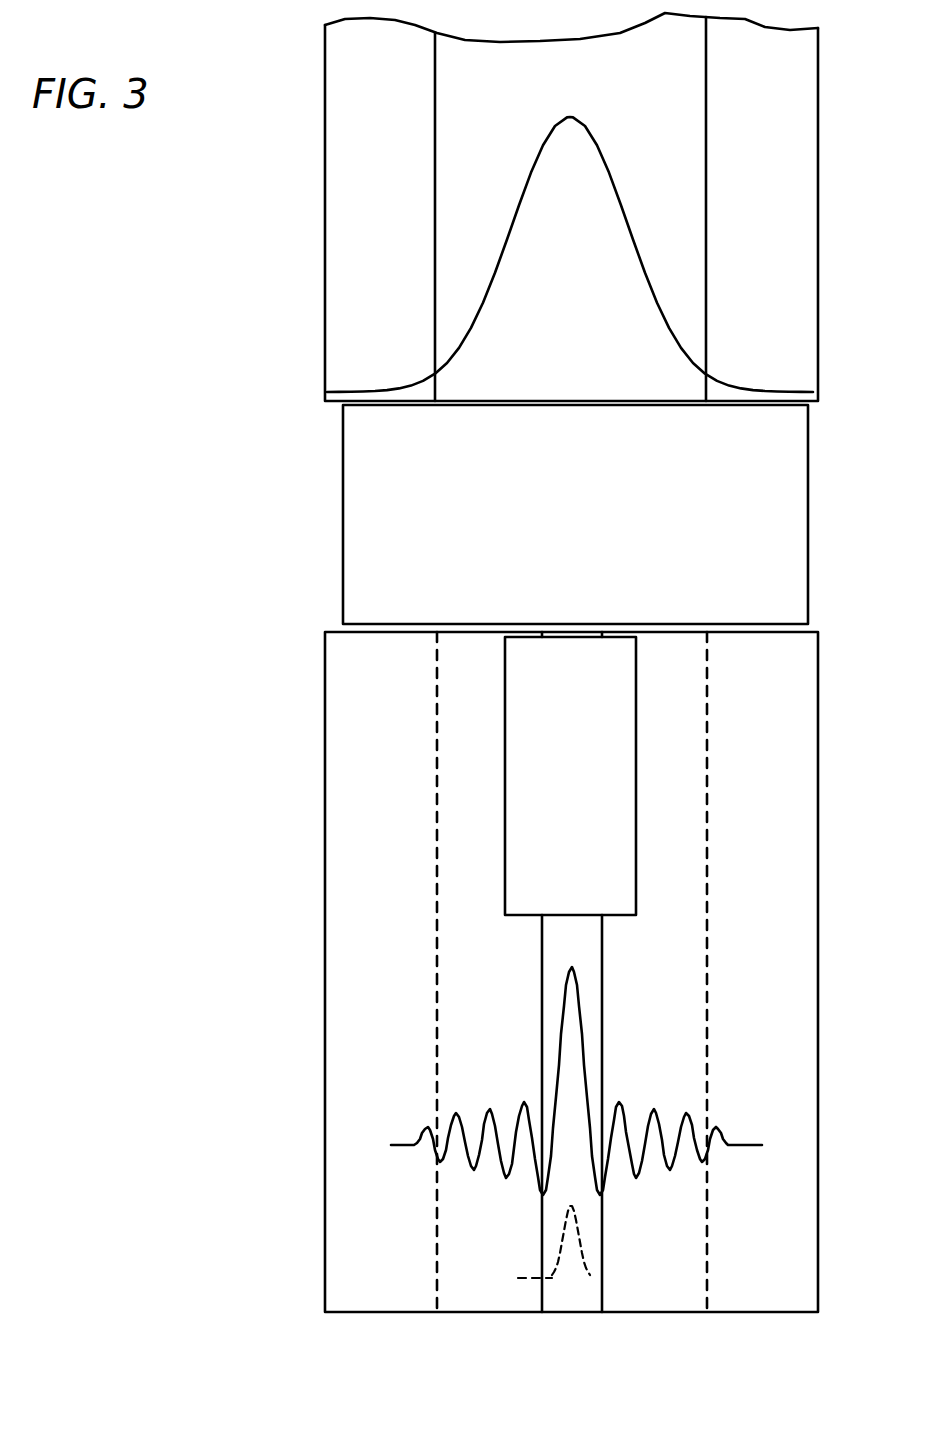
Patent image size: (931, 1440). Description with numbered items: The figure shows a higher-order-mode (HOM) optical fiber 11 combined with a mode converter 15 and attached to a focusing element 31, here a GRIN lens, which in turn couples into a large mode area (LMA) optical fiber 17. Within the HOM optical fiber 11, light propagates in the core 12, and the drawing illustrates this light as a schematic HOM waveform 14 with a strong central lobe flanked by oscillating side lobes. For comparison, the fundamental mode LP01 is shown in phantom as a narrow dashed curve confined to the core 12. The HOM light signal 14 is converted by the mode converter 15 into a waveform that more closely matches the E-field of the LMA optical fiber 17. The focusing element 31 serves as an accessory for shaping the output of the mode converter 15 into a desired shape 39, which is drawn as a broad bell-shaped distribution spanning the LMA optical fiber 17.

The HOM optical fiber 11 is at (327, 947).
The core 12 is at (603, 1025).
The HOM waveform 14 is at (762, 1145).
The mode converter 15 is at (637, 778).
The LMA optical fiber 17 is at (326, 127).
The focusing element 31 is at (343, 489).
The desired shape 39 is at (622, 207).
The fundamental mode LP01 is at (590, 1278).